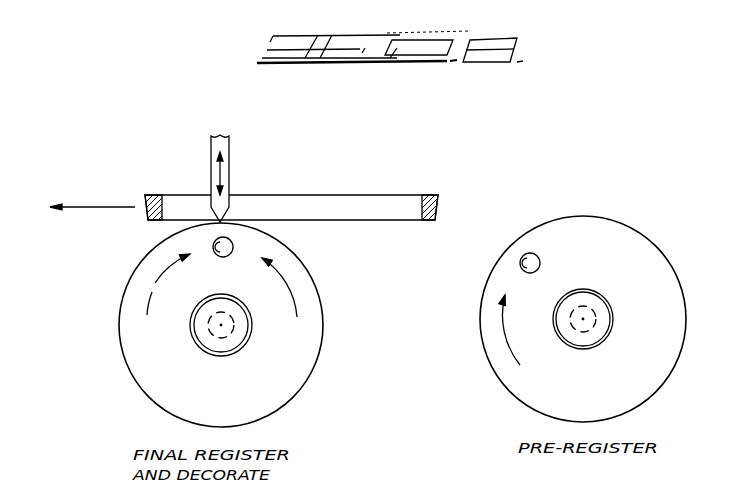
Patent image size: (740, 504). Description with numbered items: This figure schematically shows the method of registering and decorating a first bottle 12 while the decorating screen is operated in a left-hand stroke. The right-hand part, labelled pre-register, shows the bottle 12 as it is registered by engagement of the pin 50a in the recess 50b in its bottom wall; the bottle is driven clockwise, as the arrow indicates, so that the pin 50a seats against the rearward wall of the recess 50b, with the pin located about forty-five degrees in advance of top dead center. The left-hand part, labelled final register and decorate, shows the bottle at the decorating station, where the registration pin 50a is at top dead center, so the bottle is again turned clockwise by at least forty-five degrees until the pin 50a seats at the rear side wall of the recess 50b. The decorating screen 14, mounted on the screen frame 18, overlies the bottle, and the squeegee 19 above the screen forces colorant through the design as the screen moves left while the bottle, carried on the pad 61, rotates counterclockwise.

The bottle 12 is at (137, 339).
The decorating screen 14 is at (301, 191).
The screen frame 18 is at (458, 165).
The squeegee 19 is at (232, 165).
The pin 50a is at (213, 247).
The recess 50b is at (233, 247).
The pad 61 is at (208, 333).